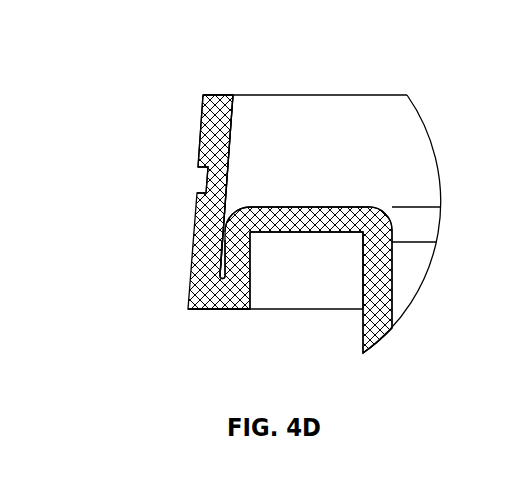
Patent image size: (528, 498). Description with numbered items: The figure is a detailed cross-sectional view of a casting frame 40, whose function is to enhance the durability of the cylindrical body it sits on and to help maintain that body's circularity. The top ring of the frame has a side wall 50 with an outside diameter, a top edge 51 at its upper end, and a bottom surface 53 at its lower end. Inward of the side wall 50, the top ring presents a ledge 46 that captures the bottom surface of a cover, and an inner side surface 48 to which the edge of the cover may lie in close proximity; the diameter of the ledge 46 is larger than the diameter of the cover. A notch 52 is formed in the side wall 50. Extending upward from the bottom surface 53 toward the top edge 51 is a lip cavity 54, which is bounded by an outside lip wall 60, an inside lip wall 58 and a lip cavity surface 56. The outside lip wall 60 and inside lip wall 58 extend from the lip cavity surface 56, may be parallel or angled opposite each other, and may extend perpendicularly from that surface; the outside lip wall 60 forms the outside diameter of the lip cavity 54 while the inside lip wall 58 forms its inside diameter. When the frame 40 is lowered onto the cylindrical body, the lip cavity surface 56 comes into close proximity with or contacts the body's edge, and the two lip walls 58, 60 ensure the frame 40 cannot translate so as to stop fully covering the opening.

The casting frame 40 is at (157, 35).
The ledge 46 is at (292, 206).
The inner side surface 48 is at (232, 123).
The side wall 50 is at (205, 127).
The top edge 51 is at (220, 92).
The notch 52 is at (200, 186).
The bottom surface 53 is at (207, 316).
The lip cavity 54 is at (306, 316).
The lip cavity surface 56 is at (313, 233).
The inside lip wall 58 is at (363, 292).
The outside lip wall 60 is at (248, 302).